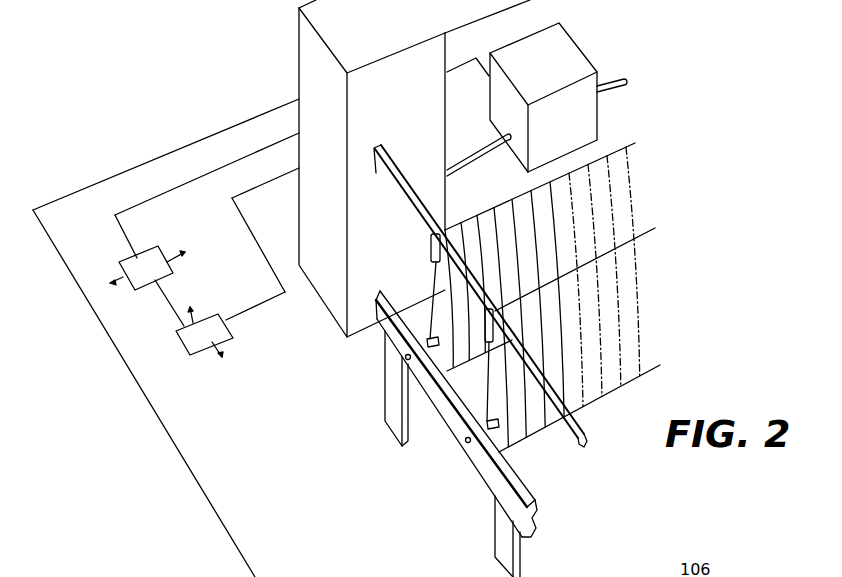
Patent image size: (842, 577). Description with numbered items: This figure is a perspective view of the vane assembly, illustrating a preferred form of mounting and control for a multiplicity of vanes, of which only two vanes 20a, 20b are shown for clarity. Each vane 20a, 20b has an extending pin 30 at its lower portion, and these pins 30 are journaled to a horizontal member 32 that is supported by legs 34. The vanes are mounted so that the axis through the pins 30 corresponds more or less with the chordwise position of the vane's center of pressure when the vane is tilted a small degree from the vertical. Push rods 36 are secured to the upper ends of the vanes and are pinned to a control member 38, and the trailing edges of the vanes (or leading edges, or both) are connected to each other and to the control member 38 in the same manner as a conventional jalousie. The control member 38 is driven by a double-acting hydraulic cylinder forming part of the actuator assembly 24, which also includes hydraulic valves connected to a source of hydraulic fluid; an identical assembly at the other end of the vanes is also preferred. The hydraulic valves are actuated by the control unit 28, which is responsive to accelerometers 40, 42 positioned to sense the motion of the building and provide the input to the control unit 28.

The vane 20a is at (566, 252).
The vane 20b is at (599, 330).
The actuator assembly 24 is at (386, 34).
The control unit 28 is at (557, 76).
The extending pin 30 is at (431, 318).
The horizontal member 32 is at (518, 482).
The legs 34 is at (384, 386).
The push rods 36 is at (428, 258).
The control member 38 is at (585, 425).
The accelerometer 40 is at (160, 279).
The accelerometer 42 is at (216, 346).